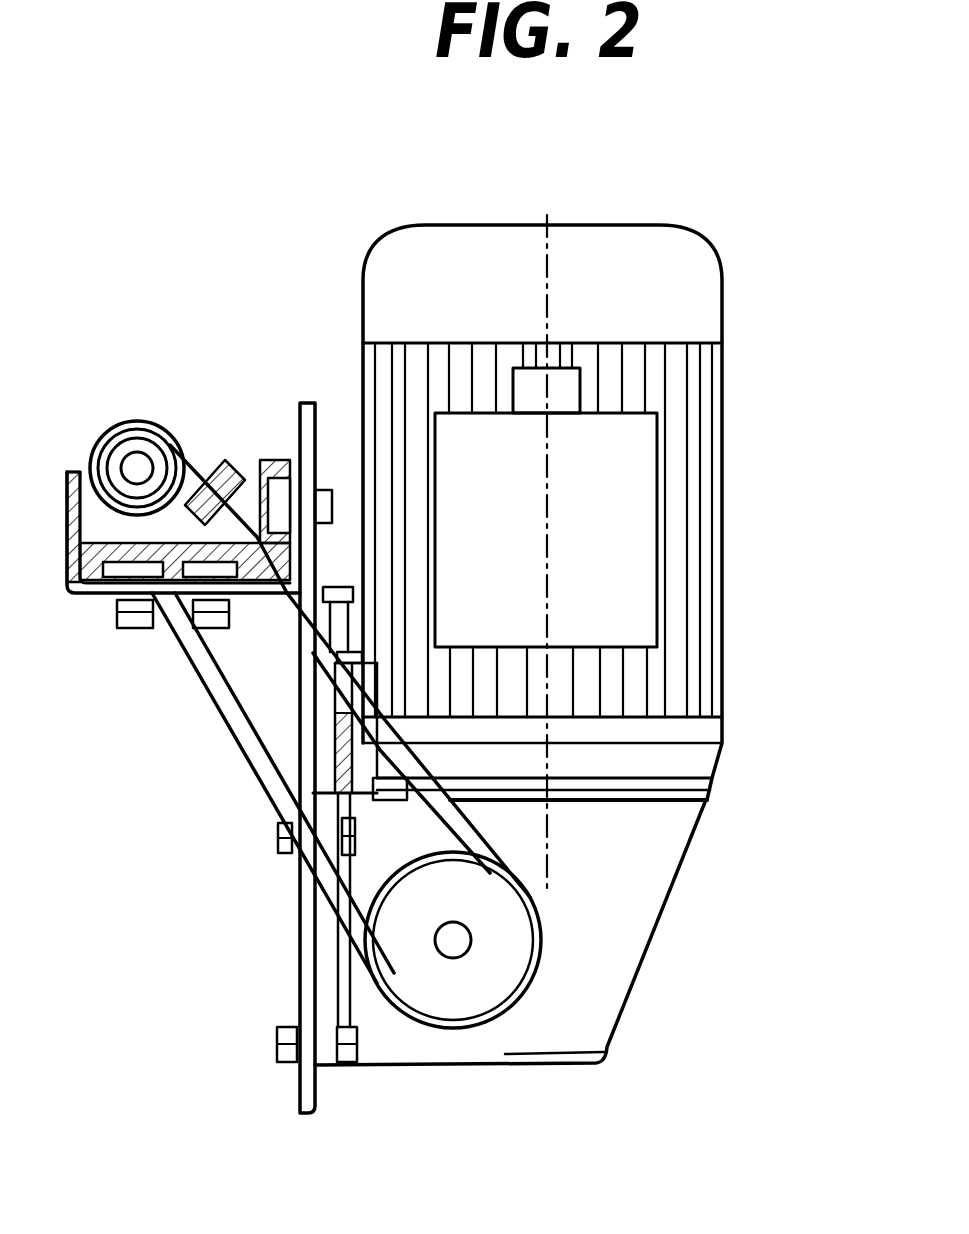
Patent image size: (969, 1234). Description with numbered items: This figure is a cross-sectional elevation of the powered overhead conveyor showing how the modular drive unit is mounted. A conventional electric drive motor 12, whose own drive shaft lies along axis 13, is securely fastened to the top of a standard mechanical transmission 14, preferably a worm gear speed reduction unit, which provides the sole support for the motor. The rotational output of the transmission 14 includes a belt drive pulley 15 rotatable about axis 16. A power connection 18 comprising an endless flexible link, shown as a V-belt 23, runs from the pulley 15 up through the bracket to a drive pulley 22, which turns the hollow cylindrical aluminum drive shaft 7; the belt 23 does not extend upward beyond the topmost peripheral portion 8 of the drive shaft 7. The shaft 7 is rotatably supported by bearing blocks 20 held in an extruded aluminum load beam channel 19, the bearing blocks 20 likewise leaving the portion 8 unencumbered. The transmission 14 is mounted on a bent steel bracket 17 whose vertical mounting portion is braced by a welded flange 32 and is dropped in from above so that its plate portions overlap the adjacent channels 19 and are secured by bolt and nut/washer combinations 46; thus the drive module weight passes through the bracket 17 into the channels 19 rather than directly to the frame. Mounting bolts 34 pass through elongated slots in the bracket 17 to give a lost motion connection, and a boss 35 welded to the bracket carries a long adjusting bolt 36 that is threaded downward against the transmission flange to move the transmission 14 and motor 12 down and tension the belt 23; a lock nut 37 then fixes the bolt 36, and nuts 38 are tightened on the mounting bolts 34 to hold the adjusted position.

The drive shaft 7 is at (148, 458).
The topmost portion of the drive shaft periphery 8 is at (143, 457).
The drive motor 12 is at (722, 530).
The axis 13 is at (547, 218).
The mechanical transmission 14 is at (627, 952).
The belt drive pulley 15 is at (503, 988).
The axis 16 is at (452, 945).
The bracket 17 is at (303, 417).
The power connection 18 is at (155, 742).
The channel 19 is at (67, 470).
The bearing blocks 20 is at (214, 462).
The drive pulley 22 is at (140, 455).
The belt 23 is at (467, 840).
The welded flange 32 is at (258, 642).
The mounting bolts 34 is at (275, 843).
The boss 35 is at (313, 697).
The adjusting bolt 36 is at (345, 588).
The lock nut 37 is at (352, 655).
The nuts 38 is at (283, 1025).
The bolts 46 is at (330, 498).